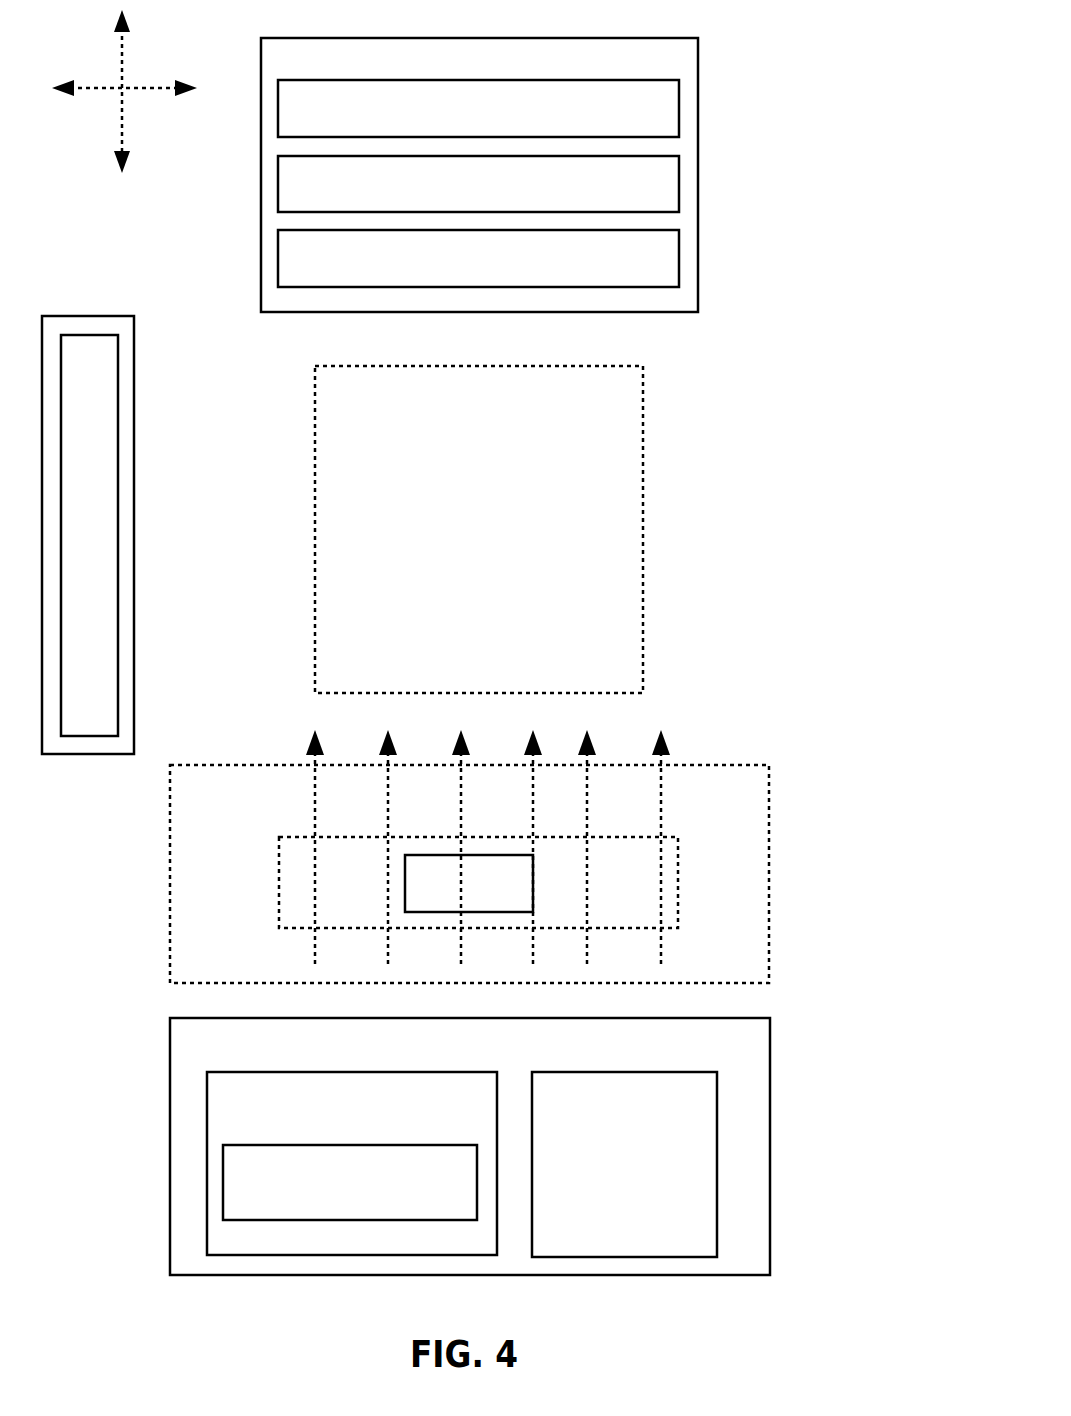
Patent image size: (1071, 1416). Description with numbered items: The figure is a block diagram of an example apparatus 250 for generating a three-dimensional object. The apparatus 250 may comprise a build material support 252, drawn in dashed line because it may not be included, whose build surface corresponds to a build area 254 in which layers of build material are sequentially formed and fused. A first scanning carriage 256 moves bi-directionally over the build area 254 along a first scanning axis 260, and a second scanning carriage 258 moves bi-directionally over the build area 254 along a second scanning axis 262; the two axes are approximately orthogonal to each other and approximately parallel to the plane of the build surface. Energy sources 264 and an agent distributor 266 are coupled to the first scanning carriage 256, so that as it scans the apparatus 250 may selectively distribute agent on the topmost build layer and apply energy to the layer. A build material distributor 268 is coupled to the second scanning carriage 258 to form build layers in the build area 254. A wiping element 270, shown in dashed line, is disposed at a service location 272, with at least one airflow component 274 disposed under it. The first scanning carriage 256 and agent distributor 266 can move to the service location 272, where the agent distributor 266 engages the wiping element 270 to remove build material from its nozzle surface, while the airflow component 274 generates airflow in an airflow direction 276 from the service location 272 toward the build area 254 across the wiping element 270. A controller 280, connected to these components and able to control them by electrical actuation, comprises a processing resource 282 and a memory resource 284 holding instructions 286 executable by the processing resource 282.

The apparatus 250 is at (866, 68).
The build material support 252 is at (312, 400).
The build area 254 is at (627, 683).
The first scanning carriage 256 is at (698, 80).
The second scanning carriage 258 is at (134, 316).
The first scanning axis 260 is at (100, 86).
The second scanning axis 262 is at (142, 76).
The energy sources 264 is at (352, 128).
The agent distributor 266 is at (352, 206).
The build material distributor 268 is at (111, 503).
The wiping element 270 is at (279, 883).
The service location 272 is at (170, 873).
The airflow component 274 is at (500, 906).
The airflow direction 276 is at (488, 840).
The controller 280 is at (758, 1061).
The processing resource 282 is at (697, 1105).
The memory resource 284 is at (478, 1135).
The instructions 286 is at (462, 1215).